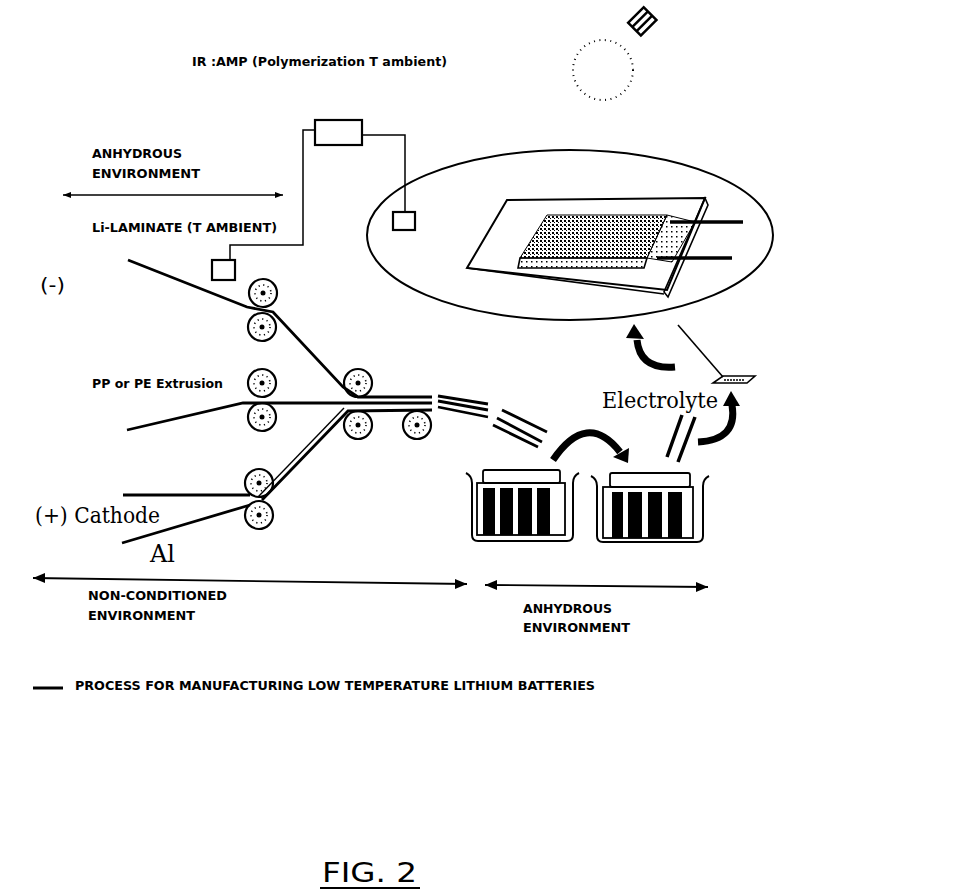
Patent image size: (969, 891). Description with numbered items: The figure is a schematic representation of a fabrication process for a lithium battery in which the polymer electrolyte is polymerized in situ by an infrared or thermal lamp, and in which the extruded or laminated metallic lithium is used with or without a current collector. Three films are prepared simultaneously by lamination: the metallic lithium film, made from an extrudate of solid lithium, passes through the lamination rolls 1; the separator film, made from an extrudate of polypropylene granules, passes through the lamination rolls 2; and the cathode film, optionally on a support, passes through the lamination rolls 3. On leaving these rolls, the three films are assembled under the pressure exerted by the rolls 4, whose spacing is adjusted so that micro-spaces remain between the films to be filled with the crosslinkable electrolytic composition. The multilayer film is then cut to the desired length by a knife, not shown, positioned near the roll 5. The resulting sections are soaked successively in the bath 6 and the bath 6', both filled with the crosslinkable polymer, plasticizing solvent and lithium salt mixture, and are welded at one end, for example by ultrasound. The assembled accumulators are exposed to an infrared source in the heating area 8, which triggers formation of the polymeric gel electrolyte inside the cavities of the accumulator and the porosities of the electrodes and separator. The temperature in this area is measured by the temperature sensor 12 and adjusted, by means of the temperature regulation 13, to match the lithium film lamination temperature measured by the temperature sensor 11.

The lamination roll 1 is at (276, 299).
The lamination roll 2 is at (268, 397).
The lamination roll 3 is at (259, 490).
The assembly rolls 4 is at (365, 402).
The roll 5 is at (417, 437).
The bath 6 is at (518, 519).
The bath 6' is at (650, 522).
The heating area 8 is at (587, 235).
The temperature sensor 11 is at (207, 263).
The temperature sensor 12 is at (418, 219).
The temperature regulation 13 is at (317, 179).